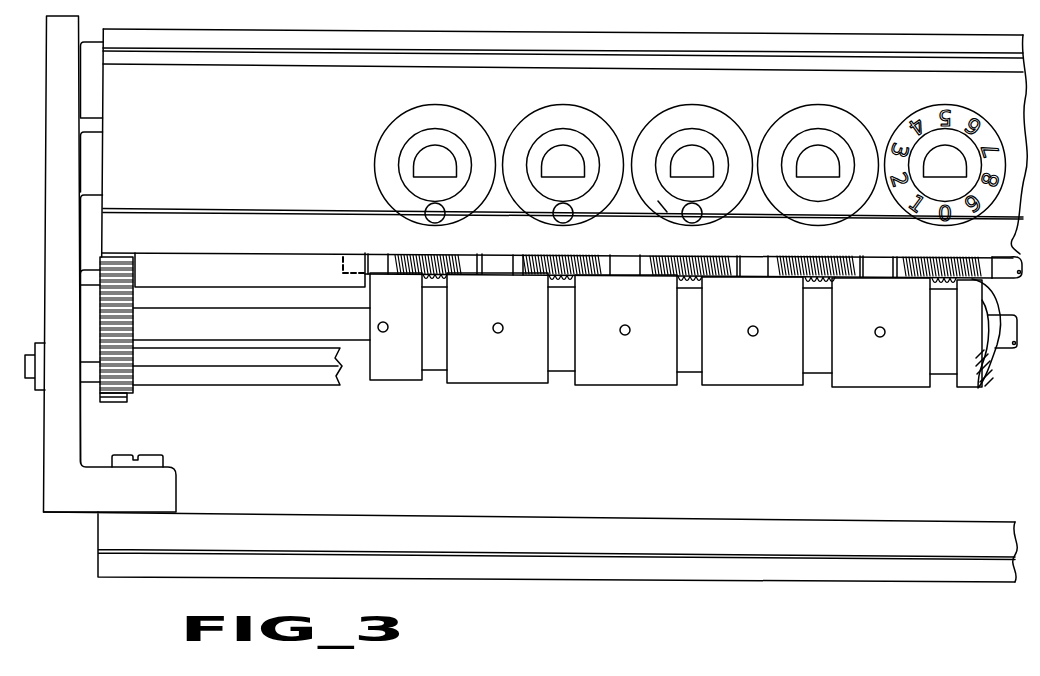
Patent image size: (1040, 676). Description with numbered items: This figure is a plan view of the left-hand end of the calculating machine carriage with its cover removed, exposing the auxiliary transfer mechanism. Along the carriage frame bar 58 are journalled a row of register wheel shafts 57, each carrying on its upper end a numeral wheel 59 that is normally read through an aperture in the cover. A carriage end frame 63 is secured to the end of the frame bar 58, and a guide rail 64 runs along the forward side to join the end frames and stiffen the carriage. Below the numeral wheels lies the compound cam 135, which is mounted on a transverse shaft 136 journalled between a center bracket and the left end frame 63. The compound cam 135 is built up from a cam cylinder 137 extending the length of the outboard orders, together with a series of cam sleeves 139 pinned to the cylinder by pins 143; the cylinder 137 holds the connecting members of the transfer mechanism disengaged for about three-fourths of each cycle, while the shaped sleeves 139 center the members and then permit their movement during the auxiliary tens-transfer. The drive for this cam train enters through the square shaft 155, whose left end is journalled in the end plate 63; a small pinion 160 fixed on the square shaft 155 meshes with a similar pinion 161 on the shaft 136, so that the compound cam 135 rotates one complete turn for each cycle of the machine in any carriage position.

The register wheel shaft 57 is at (688, 160).
The carriage frame bar 58 is at (113, 97).
The numeral wheel 59 is at (778, 140).
The carriage end frame 63 is at (60, 180).
The guide rail 64 is at (465, 562).
The compound cam 135 is at (561, 360).
The transverse shaft 136 is at (269, 330).
The cam cylinder 137 is at (814, 358).
The cam sleeve 139 is at (735, 376).
The pin 143 is at (499, 333).
The square shaft 155 is at (312, 373).
The pinion 160 is at (113, 399).
The pinion 161 is at (118, 321).